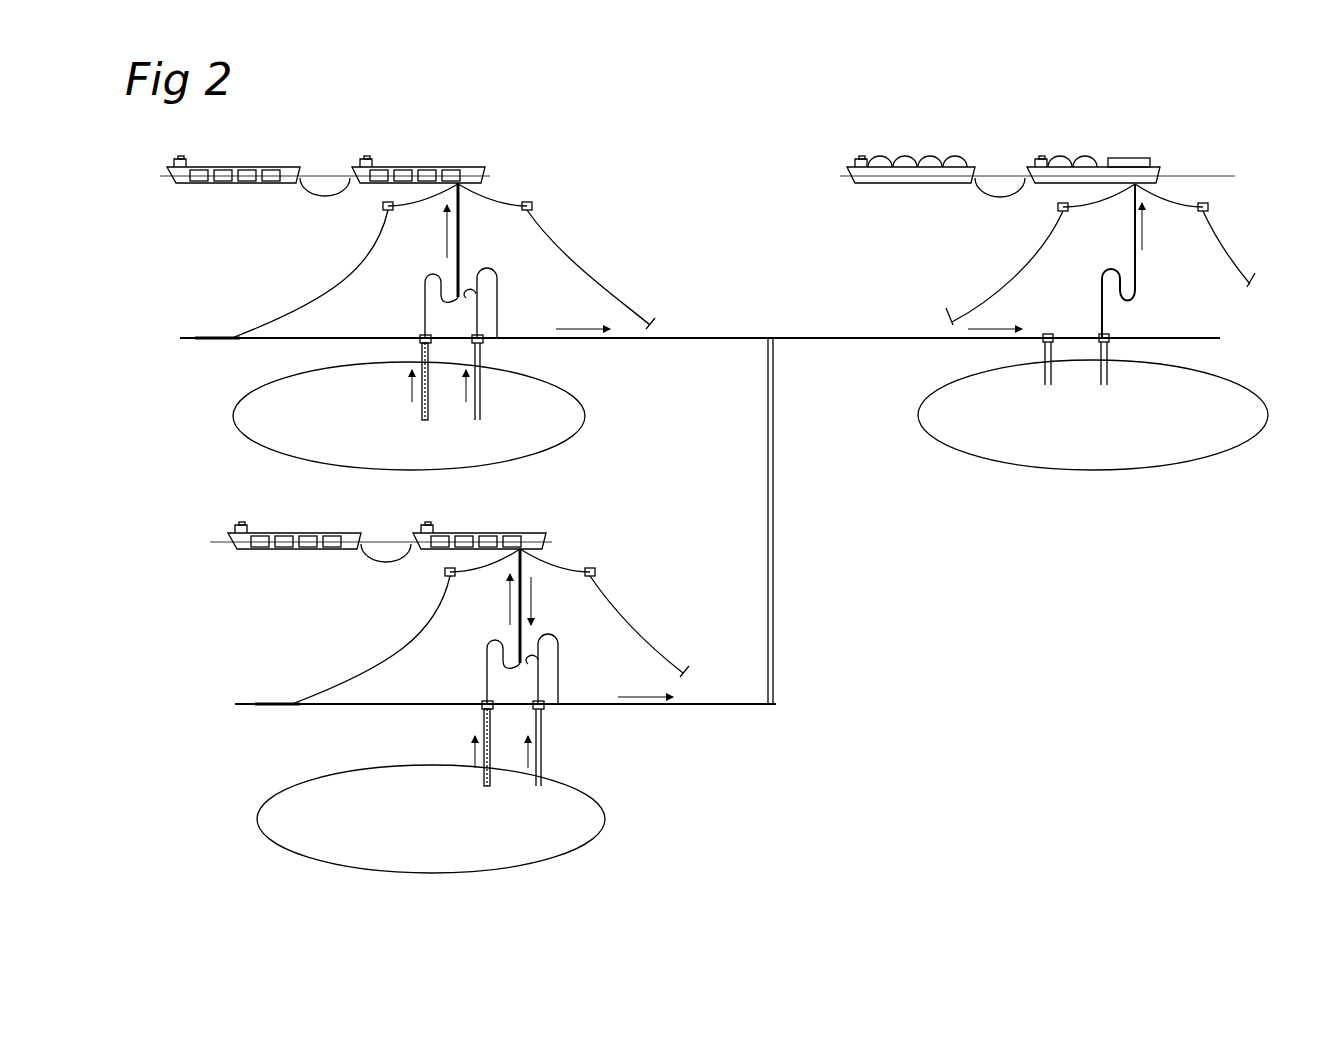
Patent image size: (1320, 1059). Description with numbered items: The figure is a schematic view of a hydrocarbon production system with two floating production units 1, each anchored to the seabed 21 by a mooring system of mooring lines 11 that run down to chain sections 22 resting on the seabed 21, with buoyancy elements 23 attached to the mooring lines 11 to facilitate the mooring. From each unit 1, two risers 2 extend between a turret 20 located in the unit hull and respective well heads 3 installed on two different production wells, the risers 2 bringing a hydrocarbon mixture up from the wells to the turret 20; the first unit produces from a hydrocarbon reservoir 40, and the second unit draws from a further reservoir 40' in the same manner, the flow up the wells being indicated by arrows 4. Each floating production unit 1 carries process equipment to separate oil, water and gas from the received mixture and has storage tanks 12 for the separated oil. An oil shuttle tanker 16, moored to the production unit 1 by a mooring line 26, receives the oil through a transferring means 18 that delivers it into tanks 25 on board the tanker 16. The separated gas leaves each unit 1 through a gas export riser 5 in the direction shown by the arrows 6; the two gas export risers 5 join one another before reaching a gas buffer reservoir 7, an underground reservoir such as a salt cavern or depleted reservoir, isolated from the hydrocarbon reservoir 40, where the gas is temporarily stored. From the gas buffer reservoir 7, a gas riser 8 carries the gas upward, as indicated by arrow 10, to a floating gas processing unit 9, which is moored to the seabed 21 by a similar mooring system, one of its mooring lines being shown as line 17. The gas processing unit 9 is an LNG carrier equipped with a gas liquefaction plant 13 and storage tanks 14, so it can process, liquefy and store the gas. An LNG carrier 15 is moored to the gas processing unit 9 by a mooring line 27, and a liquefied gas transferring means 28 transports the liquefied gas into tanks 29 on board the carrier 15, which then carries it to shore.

The floating production unit 1 is at (356, 348).
The riser 2 is at (424, 280).
The well head 3 is at (418, 334).
The well fluid flow 4 is at (408, 394).
The gas export riser 5 is at (497, 288).
The arrows 6 is at (590, 327).
The gas buffer reservoir 7 is at (1188, 446).
The gas riser 8 is at (1137, 265).
The floating gas processing unit 9 is at (1014, 160).
The upward flow 10 is at (1143, 230).
The mooring line 11 is at (313, 292).
The storage tank 12 is at (442, 166).
The gas liquefaction plant 13 is at (1140, 159).
The storage tank 14 is at (1106, 161).
The LNG carrier 15 is at (904, 152).
The oil shuttle tanker 16 is at (220, 164).
The mooring line 17 is at (1014, 278).
The transferring means 18 is at (320, 198).
The turret 20 is at (462, 178).
The seabed 21 is at (363, 336).
The chain section 22 is at (215, 336).
The buoyancy element 23 is at (383, 206).
The tank 25 is at (193, 183).
The mooring line 26 is at (328, 166).
The mooring line 27 is at (1006, 162).
The liquefied gas transferring means 28 is at (990, 200).
The tank 29 is at (929, 162).
The hydrocarbon reservoir 40 is at (422, 416).
The second production reservoir 40' is at (452, 819).